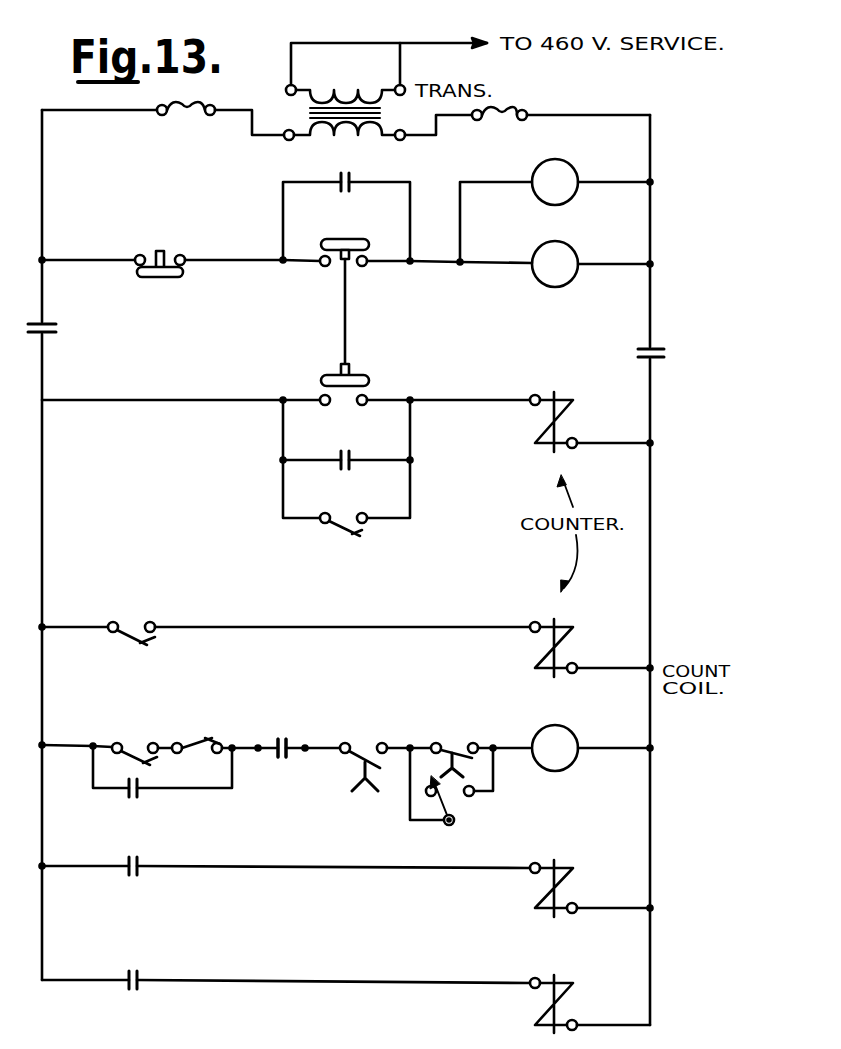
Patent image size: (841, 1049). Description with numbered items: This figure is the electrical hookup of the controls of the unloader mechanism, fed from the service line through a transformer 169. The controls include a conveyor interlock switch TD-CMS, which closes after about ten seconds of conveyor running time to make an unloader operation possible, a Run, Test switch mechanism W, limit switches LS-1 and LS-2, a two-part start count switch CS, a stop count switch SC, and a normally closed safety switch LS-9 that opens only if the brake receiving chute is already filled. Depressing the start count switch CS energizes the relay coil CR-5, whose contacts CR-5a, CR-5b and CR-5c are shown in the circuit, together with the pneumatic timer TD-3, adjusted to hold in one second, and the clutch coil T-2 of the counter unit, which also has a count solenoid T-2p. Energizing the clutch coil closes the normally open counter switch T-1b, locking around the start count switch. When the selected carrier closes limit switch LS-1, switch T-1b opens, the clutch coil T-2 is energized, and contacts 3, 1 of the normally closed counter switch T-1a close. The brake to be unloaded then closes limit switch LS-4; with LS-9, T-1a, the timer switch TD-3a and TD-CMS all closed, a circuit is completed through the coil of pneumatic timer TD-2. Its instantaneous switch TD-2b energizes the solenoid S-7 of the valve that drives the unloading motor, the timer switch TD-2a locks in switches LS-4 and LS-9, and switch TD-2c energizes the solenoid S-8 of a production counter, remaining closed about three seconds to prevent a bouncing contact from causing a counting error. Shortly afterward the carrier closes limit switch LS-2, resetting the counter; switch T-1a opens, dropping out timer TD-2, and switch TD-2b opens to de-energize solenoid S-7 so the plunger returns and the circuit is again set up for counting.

The transformer 169 is at (347, 93).
The switch contact 3 is at (270, 742).
The switch contact 1 is at (297, 742).
The relay coil CR-5 is at (557, 187).
The relay contact CR-5a is at (68, 320).
The relay contact CR-5b is at (346, 207).
The relay contact CR-5c is at (676, 343).
The pneumatic timer TD-3 is at (578, 276).
The timer switch TD-3a is at (369, 757).
The pneumatic timer TD-2 is at (562, 751).
The timer switch TD-2a is at (162, 785).
The instantaneous timer switch TD-2b is at (142, 879).
The timer switch TD-2c is at (136, 968).
The conveyor interlock switch mechanism TD-CMS is at (459, 751).
The counter switch T-1a is at (288, 762).
The counter switch T-1b is at (347, 459).
The counter clutch coil T-2 is at (635, 434).
The count solenoid T-2p is at (545, 637).
The limit switch LS-1 is at (136, 648).
The limit switch LS-2 is at (348, 540).
The limit switch LS-4 is at (138, 740).
The safety switch LS-9 is at (197, 734).
The stop count switch SC is at (162, 264).
The start count switch CS is at (334, 271).
The solenoid S-7 is at (635, 885).
The production counter solenoid S-8 is at (555, 992).
The Run, Test switch mechanism W is at (453, 797).